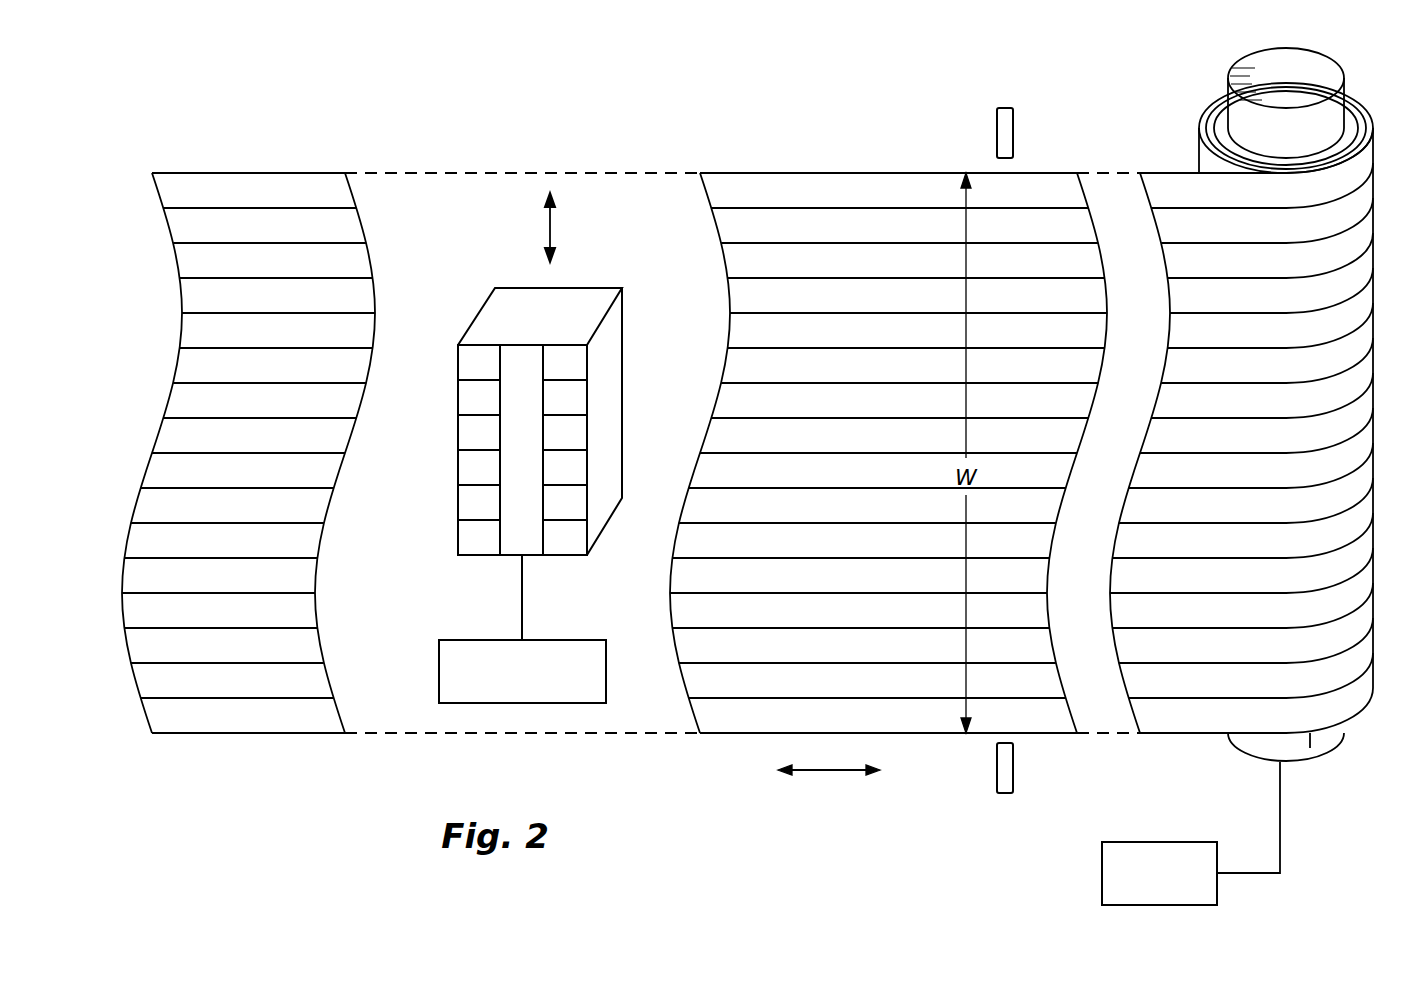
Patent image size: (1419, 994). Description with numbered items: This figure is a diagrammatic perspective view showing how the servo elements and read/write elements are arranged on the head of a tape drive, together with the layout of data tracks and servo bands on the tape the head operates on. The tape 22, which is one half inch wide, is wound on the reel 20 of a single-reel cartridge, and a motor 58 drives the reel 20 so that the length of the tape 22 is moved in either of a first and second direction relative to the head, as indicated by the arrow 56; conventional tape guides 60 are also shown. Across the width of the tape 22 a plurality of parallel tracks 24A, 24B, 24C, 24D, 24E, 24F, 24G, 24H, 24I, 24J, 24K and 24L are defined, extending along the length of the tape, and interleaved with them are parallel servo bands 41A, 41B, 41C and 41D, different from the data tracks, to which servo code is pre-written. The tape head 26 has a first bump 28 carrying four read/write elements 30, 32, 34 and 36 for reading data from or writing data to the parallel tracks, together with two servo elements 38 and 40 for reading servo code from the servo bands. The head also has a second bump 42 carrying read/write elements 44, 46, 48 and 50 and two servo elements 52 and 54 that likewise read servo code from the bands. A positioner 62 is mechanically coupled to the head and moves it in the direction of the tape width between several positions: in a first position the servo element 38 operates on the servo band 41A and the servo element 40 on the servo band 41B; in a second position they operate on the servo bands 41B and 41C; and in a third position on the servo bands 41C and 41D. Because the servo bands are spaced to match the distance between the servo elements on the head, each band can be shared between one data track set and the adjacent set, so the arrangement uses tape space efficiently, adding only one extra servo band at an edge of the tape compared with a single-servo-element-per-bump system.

The reel 20 is at (1308, 74).
The tape 22 is at (248, 736).
The track 24A is at (909, 228).
The track 24B is at (916, 263).
The track 24C is at (918, 298).
The track 24D is at (916, 333).
The track 24E is at (900, 403).
The track 24F is at (888, 438).
The track 24G is at (877, 473).
The track 24H is at (867, 508).
The track 24I is at (858, 578).
The track 24J is at (860, 613).
The track 24K is at (867, 648).
The track 24L is at (877, 683).
The servo band 41A is at (894, 190).
The servo band 41B is at (909, 368).
The servo band 41C is at (860, 543).
The servo band 41D is at (888, 718).
The tape head 26 is at (537, 305).
The first bump 28 is at (444, 455).
The second bump 42 is at (609, 429).
The servo element 38 is at (474, 366).
The read/write element 30 is at (474, 401).
The read/write element 32 is at (474, 436).
The read/write element 34 is at (474, 471).
The read/write element 36 is at (474, 506).
The servo element 40 is at (474, 541).
The servo element 52 is at (572, 366).
The read/write element 44 is at (572, 401).
The read/write element 46 is at (572, 436).
The read/write element 48 is at (572, 471).
The read/write element 50 is at (572, 506).
The servo element 54 is at (572, 541).
The arrow 56 is at (822, 774).
The motor 58 is at (1102, 876).
The tape guide 60 is at (997, 128).
The positioner 62 is at (439, 668).